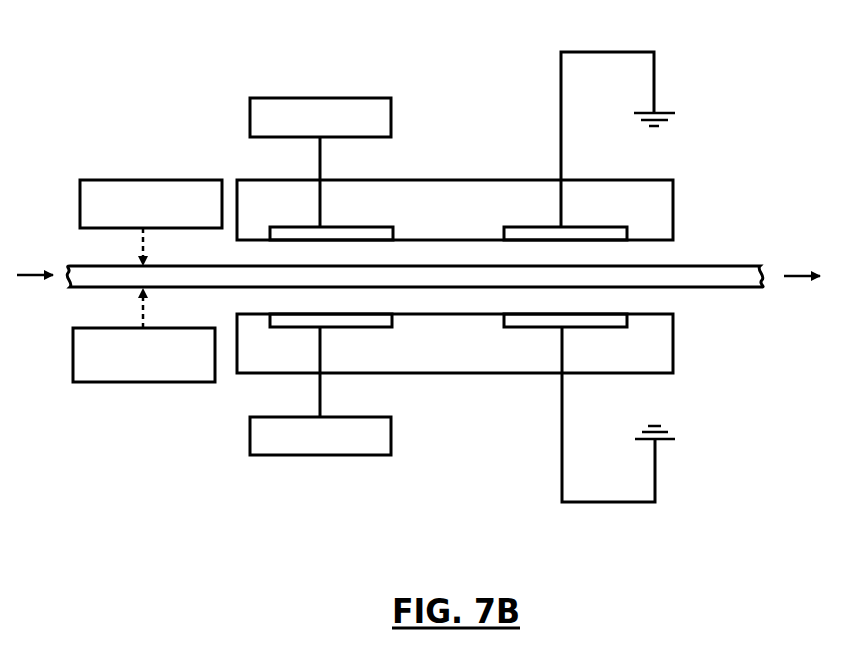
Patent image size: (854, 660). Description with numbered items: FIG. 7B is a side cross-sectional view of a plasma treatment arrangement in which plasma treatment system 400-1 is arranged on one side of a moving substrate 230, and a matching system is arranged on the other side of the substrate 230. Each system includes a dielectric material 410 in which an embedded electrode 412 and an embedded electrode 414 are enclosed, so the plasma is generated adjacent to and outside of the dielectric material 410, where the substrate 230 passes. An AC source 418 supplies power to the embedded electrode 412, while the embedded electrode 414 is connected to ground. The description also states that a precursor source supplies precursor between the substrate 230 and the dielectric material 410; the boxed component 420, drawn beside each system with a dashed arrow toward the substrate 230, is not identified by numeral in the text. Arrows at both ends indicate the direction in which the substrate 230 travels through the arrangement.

The plasma treatment system 400-1 is at (212, 53).
The AC source 418 is at (308, 98).
The sensor or monitoring unit 420 is at (145, 180).
The dielectric material 410 is at (423, 180).
The embedded electrode 412 is at (342, 227).
The embedded electrode 414 is at (580, 227).
The substrate 230 is at (722, 266).